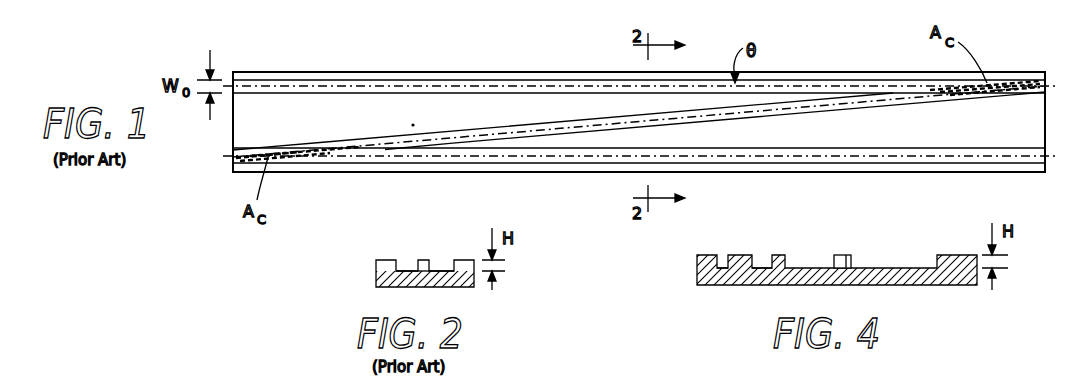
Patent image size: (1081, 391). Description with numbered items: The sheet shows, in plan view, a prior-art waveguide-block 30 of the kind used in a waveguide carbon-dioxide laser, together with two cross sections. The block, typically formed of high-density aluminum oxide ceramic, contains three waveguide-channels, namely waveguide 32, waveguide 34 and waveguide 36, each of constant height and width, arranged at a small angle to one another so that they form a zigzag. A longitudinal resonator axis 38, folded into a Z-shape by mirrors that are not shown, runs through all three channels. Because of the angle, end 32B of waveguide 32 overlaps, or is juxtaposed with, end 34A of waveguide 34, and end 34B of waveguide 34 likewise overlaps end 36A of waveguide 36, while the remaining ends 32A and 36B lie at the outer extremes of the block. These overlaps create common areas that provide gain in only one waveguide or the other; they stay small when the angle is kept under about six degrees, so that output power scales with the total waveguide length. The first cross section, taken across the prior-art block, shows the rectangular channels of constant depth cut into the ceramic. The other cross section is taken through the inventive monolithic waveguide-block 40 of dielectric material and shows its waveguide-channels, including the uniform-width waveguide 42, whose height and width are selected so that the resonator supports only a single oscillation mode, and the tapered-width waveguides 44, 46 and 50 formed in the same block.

In FIG. 1, the waveguide-block 30 is at (226, 192).
In FIG. 1, the waveguide 32 is at (364, 65).
In FIG. 2, the waveguide 32 is at (388, 250).
In FIG. 1, the end of waveguide 32 32A is at (253, 80).
In FIG. 1, the end of waveguide 32 32B is at (1003, 78).
In FIG. 1, the waveguide 34 is at (547, 112).
In FIG. 2, the waveguide 34 is at (432, 249).
In FIG. 1, the end of waveguide 34 34A is at (957, 100).
In FIG. 1, the end of waveguide 34 34B is at (308, 143).
In FIG. 1, the waveguide 36 is at (542, 167).
In FIG. 2, the waveguide 36 is at (465, 284).
In FIG. 1, the end of waveguide 36 36A is at (285, 163).
In FIG. 1, the end of waveguide 36 36B is at (997, 160).
In FIG. 1, the longitudinal resonator axis 38 is at (412, 138).
In FIG. 2, the waveguide-block 40 is at (263, 390).
In FIG. 4, the waveguide 42 is at (720, 248).
In FIG. 4, the waveguide 44 is at (766, 253).
In FIG. 4, the waveguide 46 is at (810, 256).
In FIG. 4, the waveguide 50 is at (925, 257).